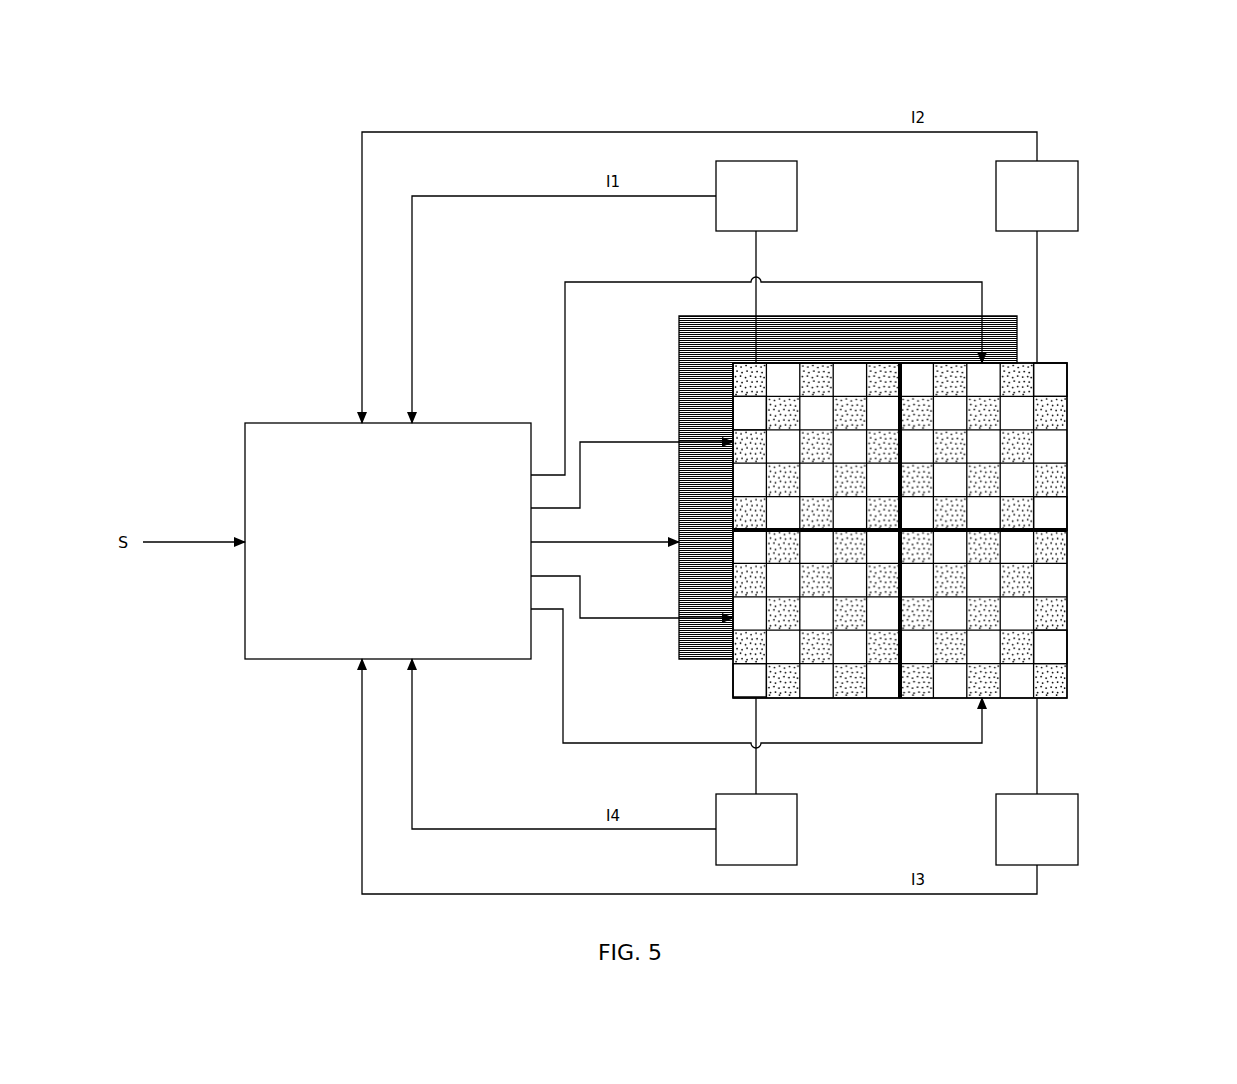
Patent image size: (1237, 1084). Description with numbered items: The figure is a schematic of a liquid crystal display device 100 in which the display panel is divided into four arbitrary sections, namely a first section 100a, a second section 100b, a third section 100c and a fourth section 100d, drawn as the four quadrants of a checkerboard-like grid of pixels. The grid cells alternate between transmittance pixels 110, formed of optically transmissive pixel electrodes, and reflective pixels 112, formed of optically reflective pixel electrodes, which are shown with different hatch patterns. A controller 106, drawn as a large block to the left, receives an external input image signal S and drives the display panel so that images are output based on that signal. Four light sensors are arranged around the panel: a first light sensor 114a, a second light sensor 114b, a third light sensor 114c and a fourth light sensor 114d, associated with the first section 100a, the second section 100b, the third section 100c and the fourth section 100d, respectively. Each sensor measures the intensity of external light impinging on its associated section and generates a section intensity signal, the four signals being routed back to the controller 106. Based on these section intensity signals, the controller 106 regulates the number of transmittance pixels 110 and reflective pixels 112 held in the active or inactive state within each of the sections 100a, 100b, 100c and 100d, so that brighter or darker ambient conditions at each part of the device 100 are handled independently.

The liquid crystal display device 100 is at (1105, 122).
The first section 100a is at (785, 408).
The second section 100b is at (1048, 388).
The third section 100c is at (1047, 677).
The fourth section 100d is at (748, 647).
The controller 106 is at (388, 541).
The transmittance pixels 110 is at (743, 417).
The reflective pixels 112 is at (810, 373).
The first light sensor 114a is at (756, 196).
The second light sensor 114b is at (1037, 196).
The third light sensor 114c is at (1037, 829).
The fourth light sensor 114d is at (756, 829).